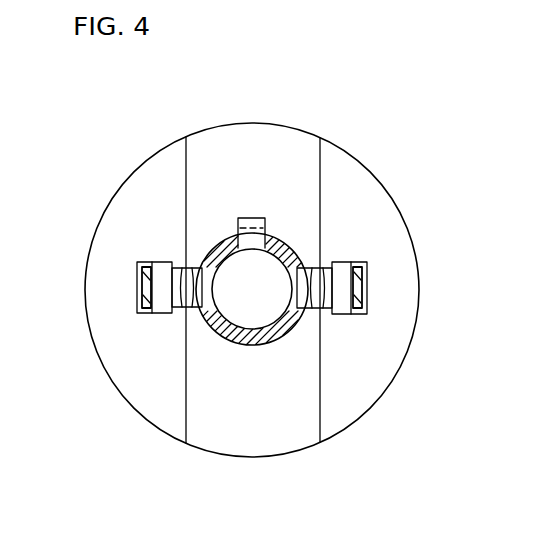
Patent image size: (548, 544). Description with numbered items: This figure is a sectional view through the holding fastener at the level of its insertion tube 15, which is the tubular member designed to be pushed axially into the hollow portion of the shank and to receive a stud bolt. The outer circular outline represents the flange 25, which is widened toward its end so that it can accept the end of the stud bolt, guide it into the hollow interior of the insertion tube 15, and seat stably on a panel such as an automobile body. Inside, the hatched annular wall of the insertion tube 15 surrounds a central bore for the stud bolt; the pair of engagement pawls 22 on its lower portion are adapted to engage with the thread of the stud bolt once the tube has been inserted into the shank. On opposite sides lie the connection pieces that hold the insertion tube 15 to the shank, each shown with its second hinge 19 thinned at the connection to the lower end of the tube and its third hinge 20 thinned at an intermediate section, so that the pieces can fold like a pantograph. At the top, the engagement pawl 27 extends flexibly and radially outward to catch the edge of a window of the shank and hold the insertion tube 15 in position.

The insertion tube 15 is at (253, 346).
The second hinge 19 is at (183, 307).
The third hinge 20 is at (137, 292).
The engagement pawls 22 is at (210, 333).
The flange 25 is at (366, 175).
The engagement pawl 27 is at (253, 218).